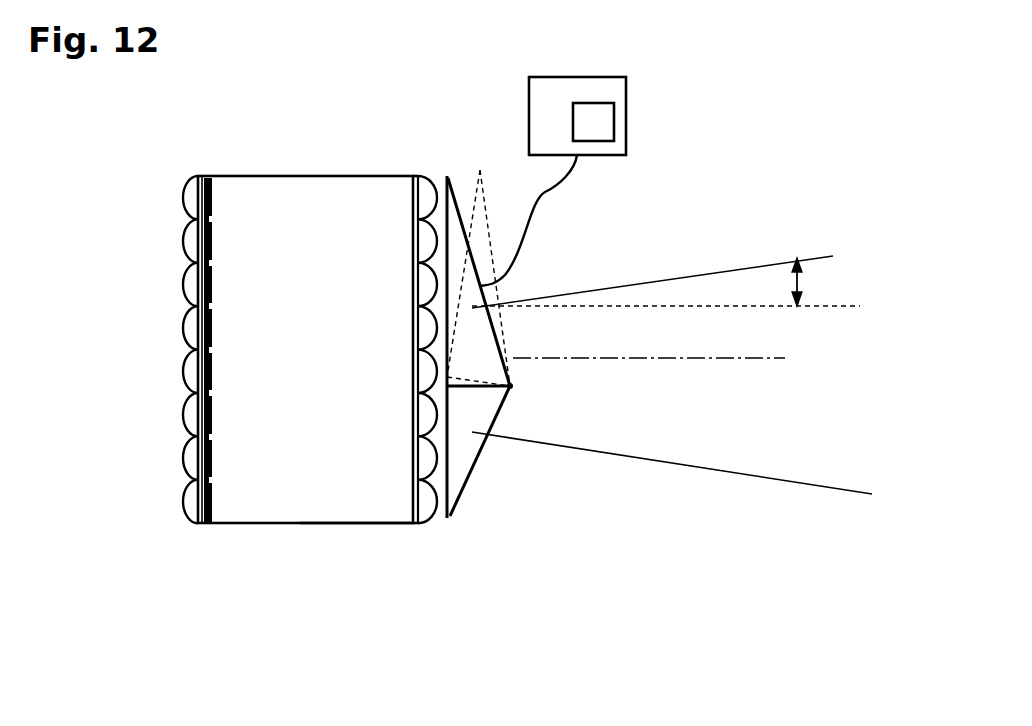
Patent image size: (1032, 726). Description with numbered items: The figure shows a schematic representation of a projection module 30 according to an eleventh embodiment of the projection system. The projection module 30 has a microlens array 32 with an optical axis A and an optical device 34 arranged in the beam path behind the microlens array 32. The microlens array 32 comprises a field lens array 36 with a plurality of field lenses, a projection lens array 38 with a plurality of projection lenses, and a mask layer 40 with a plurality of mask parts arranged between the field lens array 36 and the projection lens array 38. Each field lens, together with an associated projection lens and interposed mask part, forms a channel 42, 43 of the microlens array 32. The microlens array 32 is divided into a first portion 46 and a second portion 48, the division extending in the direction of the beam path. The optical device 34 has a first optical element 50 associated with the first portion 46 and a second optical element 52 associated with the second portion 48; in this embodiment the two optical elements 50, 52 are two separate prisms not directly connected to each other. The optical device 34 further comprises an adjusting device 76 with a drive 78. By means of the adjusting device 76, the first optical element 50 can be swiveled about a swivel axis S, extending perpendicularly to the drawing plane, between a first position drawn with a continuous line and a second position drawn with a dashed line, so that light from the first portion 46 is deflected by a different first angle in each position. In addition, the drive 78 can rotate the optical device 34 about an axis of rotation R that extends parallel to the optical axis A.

The projection module 30 is at (152, 322).
The microlens array 32 is at (328, 173).
The optical device 34 is at (456, 517).
The field lens array 36 is at (188, 178).
The projection lens array 38 is at (432, 193).
The mask layer 40 is at (212, 178).
The channel 42 is at (302, 195).
The channel 43 is at (318, 503).
The first portion 46 is at (334, 281).
The second portion 48 is at (334, 456).
The first optical element 50 is at (455, 210).
The second optical element 52 is at (460, 457).
The adjusting device 76 is at (626, 152).
The drive 78 is at (614, 124).
The swivel axis S is at (515, 388).
The optical axis A is at (832, 310).
The axis of rotation R is at (763, 360).